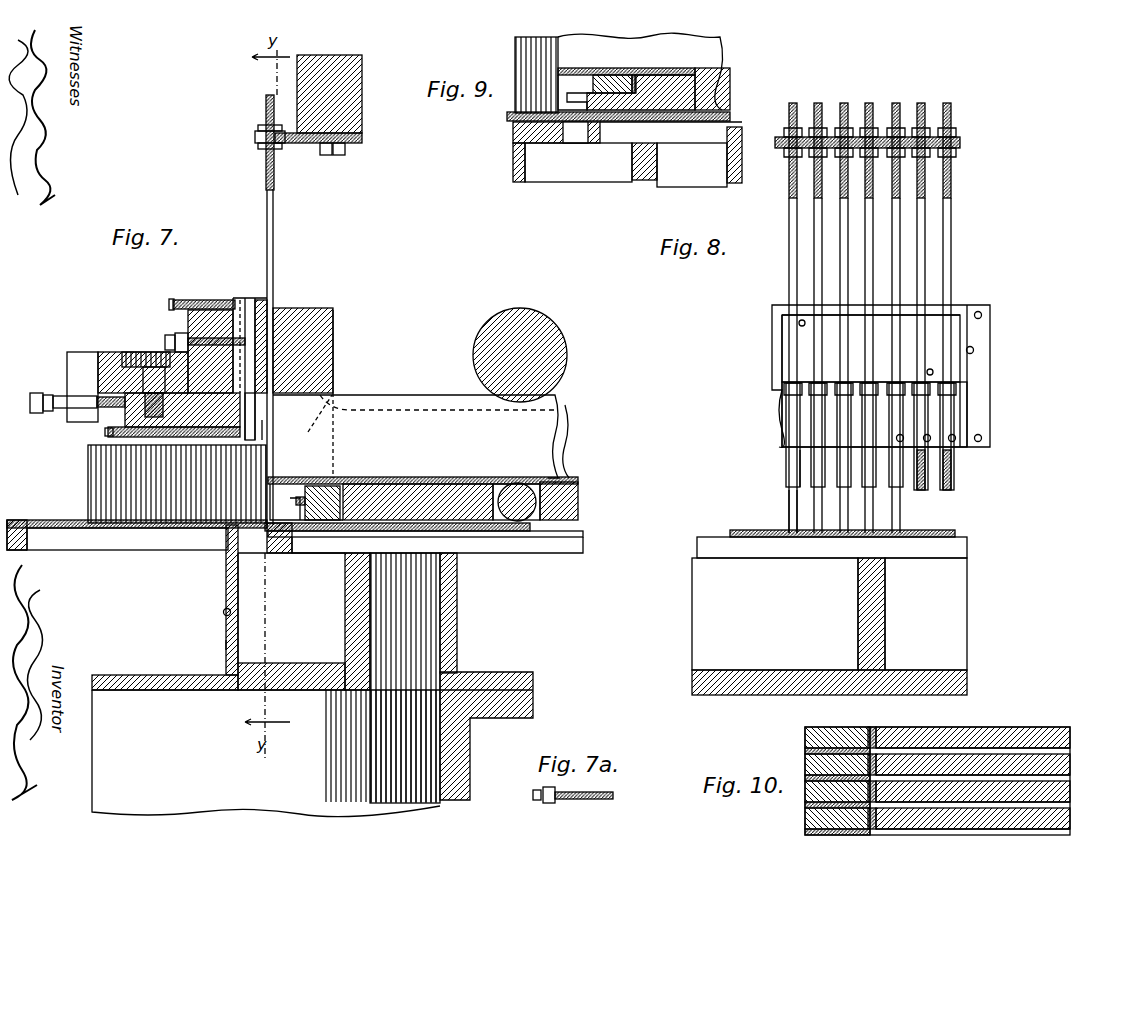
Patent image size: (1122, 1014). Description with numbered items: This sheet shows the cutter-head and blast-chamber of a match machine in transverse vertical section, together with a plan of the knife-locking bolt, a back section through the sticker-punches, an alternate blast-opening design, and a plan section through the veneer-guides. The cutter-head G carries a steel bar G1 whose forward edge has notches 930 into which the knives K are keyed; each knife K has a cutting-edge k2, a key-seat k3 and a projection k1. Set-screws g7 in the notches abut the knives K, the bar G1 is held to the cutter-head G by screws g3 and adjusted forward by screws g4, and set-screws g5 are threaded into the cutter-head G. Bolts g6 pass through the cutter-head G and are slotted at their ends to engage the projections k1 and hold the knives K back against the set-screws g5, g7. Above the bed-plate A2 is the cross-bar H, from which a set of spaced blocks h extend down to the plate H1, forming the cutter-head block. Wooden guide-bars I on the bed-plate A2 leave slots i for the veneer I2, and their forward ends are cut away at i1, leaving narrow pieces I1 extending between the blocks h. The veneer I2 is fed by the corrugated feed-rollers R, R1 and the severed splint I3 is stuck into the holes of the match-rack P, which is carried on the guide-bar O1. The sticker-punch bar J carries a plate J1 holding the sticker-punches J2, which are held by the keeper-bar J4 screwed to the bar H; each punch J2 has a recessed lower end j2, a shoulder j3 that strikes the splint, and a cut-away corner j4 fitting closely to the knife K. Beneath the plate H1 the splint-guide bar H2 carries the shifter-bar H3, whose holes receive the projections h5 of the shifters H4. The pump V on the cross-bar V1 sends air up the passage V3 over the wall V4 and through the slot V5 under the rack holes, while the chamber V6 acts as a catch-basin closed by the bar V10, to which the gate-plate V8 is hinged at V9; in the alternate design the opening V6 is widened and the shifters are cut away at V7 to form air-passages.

In FIG. 7, the sticker-punch bar J is at (345, 107).
In FIG. 7, the plate J1 is at (290, 144).
In FIG. 8, the plate J1 is at (960, 143).
In FIG. 7, the sticker-punch J2 is at (274, 231).
In FIG. 8, the sticker-punch J2 is at (900, 257).
In FIG. 7, the keeper-bar J4 is at (260, 300).
In FIG. 8, the keeper-bar J4 is at (930, 345).
In FIG. 7, the projection of the knife k1 is at (241, 302).
In FIG. 7, the key-seat k3 is at (338, 367).
In FIG. 8, the cutting-edge k2 is at (805, 450).
In FIG. 7, the cross-bar H is at (303, 339).
In FIG. 7, the set-screw g5 is at (174, 300).
In FIG. 8, the set-screw g5 is at (985, 315).
In FIG. 7, the bolt g6 is at (169, 334).
In FIG. 7A, the bolt g6 is at (573, 804).
In FIG. 8, the bolt g6 is at (975, 350).
In FIG. 7, the screw g3 is at (148, 353).
In FIG. 7, the screw g4 is at (38, 393).
In FIG. 7, the set-screw g7 is at (108, 432).
In FIG. 8, the set-screw g7 is at (985, 438).
In FIG. 7, the cutter-head G is at (104, 358).
In FIG. 8, the cutter-head G is at (965, 309).
In FIG. 7, the steel bar G1 is at (182, 410).
In FIG. 8, the steel bar G1 is at (780, 425).
In FIG. 7, the knife K is at (256, 415).
In FIG. 8, the knife K is at (820, 425).
In FIG. 7, the notch 930 is at (264, 428).
In FIG. 8, the notch 930 is at (975, 395).
In FIG. 7, the block h is at (335, 424).
In FIG. 10, the block h is at (805, 749).
In FIG. 7, the wooden guide-bar I is at (345, 396).
In FIG. 10, the wooden guide-bar I is at (1045, 745).
In FIG. 10, the narrow piece I1 is at (823, 735).
In FIG. 7, the veneer I2 is at (532, 441).
In FIG. 9, the veneer I2 is at (640, 71).
In FIG. 7, the severed splint I3 is at (120, 478).
In FIG. 9, the severed splint I3 is at (520, 48).
In FIG. 8, the severed splint I3 is at (873, 510).
In FIG. 7, the feed-roller R is at (516, 483).
In FIG. 7, the feed-roller R1 is at (542, 333).
In FIG. 7, the plate H1 is at (370, 478).
In FIG. 9, the plate H1 is at (700, 68).
In FIG. 10, the plate H1 is at (845, 735).
In FIG. 7, the splint-guide bar H2 is at (355, 515).
In FIG. 9, the splint-guide bar H2 is at (641, 92).
In FIG. 7, the shifter-bar H3 is at (325, 490).
In FIG. 9, the shifter-bar H3 is at (640, 74).
In FIG. 7, the shifter H4 is at (280, 490).
In FIG. 9, the shifter H4 is at (575, 76).
In FIG. 7, the projection of the shifter h5 is at (305, 497).
In FIG. 9, the projection of the shifter h5 is at (634, 74).
In FIG. 7, the bed-plate A2 is at (580, 498).
In FIG. 9, the bed-plate A2 is at (731, 90).
In FIG. 10, the bed-plate A2 is at (1000, 732).
In FIG. 7, the match-rack P is at (135, 530).
In FIG. 9, the match-rack P is at (731, 116).
In FIG. 8, the match-rack P is at (760, 530).
In FIG. 7, the guide-bar O1 is at (36, 520).
In FIG. 7, the pump V is at (312, 744).
In FIG. 7, the cross-bar V1 is at (290, 665).
In FIG. 8, the cross-bar V1 is at (770, 678).
In FIG. 7, the passage V3 is at (413, 678).
In FIG. 9, the passage V3 is at (699, 157).
In FIG. 7, the wall V4 is at (345, 585).
In FIG. 9, the wall V4 is at (652, 162).
In FIG. 7, the slot V5 is at (266, 550).
In FIG. 8, the slot V5 is at (832, 547).
In FIG. 7, the chamber V6 is at (270, 608).
In FIG. 9, the chamber V6 is at (578, 162).
In FIG. 8, the chamber V6 is at (775, 614).
In FIG. 9, the air-passage V7 is at (568, 107).
In FIG. 7, the gate-plate V8 is at (226, 645).
In FIG. 7, the hinge V9 is at (223, 612).
In FIG. 7, the bar V10 is at (226, 575).
In FIG. 8, the recessed lower end j2 is at (955, 483).
In FIG. 8, the shoulder j3 is at (950, 460).
In FIG. 8, the corner of the punch j4 is at (950, 405).
In FIG. 10, the slot i is at (1070, 757).
In FIG. 10, the cut-away i1 is at (878, 735).